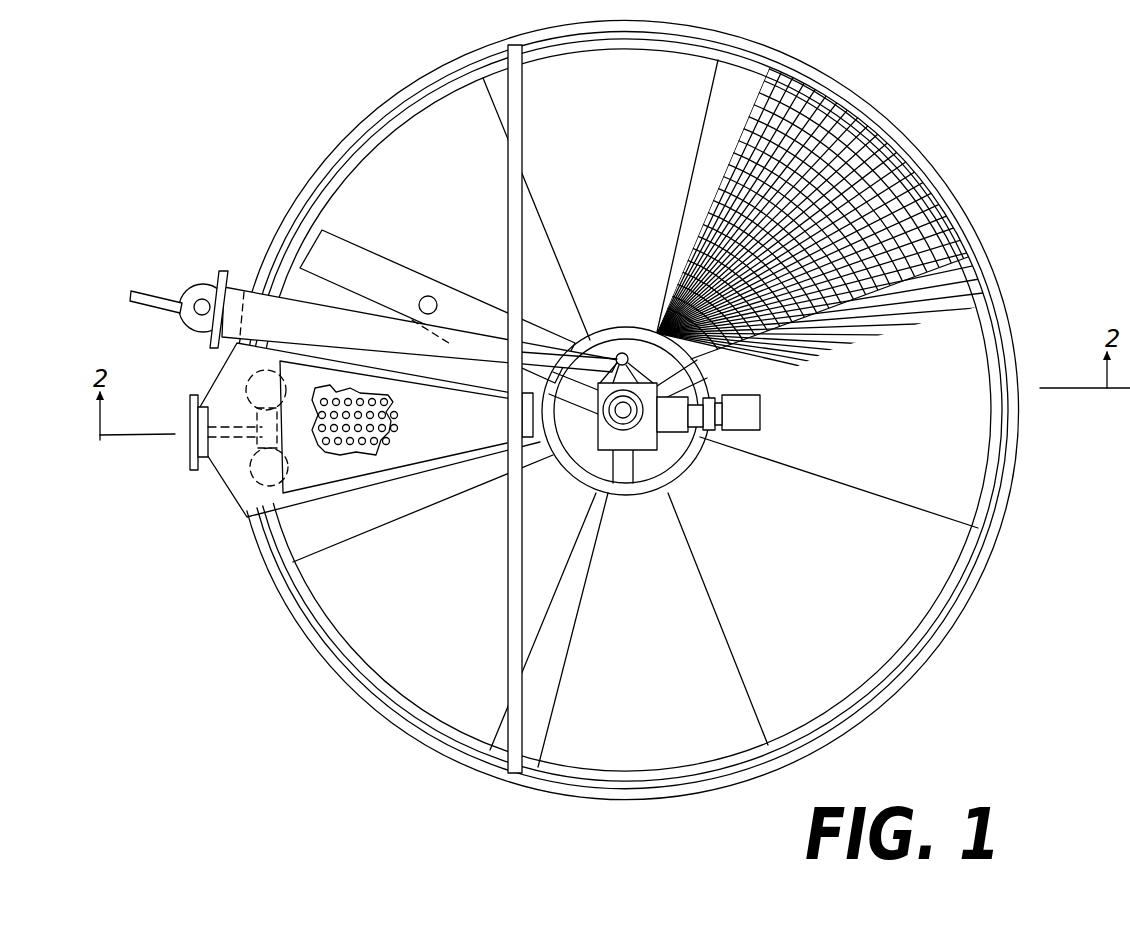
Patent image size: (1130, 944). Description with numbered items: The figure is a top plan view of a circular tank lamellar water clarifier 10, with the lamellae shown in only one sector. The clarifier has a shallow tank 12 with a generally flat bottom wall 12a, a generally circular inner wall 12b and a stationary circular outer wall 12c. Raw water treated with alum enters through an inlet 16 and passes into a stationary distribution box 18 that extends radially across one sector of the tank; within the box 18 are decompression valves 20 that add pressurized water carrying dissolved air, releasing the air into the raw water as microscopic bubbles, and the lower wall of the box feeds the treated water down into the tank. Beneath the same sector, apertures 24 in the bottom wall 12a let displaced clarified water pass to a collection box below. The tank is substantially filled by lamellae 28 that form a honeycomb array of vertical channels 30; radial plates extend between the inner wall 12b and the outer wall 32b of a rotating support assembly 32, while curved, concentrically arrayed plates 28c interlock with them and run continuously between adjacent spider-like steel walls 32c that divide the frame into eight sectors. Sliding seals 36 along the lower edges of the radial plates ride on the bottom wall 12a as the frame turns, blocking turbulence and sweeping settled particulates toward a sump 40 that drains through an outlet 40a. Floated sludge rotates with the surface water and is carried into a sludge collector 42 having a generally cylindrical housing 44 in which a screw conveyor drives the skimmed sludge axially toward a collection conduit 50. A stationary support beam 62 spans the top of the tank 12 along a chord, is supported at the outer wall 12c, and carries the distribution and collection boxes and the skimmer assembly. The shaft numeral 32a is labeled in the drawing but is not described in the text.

The water clarifier 10 is at (246, 590).
The tank 12 is at (996, 270).
The bottom wall 12a is at (838, 597).
The inner wall 12b is at (701, 396).
The outer wall 12c is at (1012, 333).
The inlet 16 is at (195, 446).
The distribution box 18 is at (236, 474).
The decompression valves 20 is at (284, 392).
The apertures 24 is at (389, 421).
The lamellae 28 is at (828, 102).
The channels 30 is at (857, 211).
The curved plates 28c is at (752, 189).
The support assembly 32 is at (598, 369).
The shaft 32a is at (705, 415).
The outer wall of support assembly 32b is at (1003, 307).
The steel walls 32c is at (906, 290).
The sliding seals 36 is at (808, 298).
The sump 40 is at (363, 264).
The outlet 40a is at (428, 296).
The sludge collector 42 is at (150, 318).
The housing 44 is at (210, 274).
The collection conduit 50 is at (205, 330).
The support beam 62 is at (507, 171).